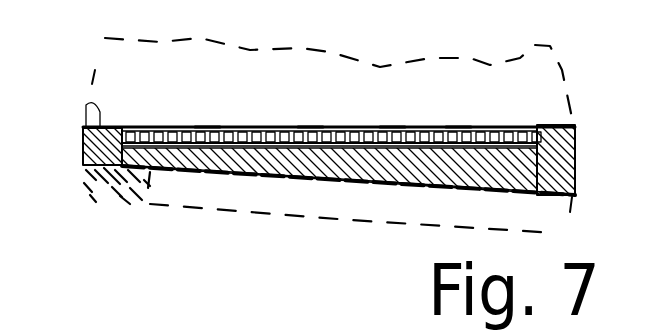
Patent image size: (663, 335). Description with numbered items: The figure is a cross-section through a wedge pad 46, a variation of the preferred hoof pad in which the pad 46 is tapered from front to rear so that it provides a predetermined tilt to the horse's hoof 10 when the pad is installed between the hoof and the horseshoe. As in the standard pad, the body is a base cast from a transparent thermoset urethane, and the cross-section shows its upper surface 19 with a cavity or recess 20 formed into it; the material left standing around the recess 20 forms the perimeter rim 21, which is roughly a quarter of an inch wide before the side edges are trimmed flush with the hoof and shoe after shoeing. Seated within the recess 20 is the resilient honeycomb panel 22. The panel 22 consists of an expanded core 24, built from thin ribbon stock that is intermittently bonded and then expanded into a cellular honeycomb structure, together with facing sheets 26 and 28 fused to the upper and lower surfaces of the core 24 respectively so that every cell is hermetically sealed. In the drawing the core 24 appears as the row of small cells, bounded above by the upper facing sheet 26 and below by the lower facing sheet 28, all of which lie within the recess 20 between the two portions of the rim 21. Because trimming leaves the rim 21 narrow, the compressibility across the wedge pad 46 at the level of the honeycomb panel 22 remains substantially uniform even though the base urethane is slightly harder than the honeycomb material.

The horse's hoof 10 is at (117, 32).
The upper surface 19 is at (86, 105).
The cavity or recess 20 is at (137, 127).
The perimeter rim 21 is at (83, 140).
The resilient honeycomb panel 22 is at (207, 127).
The expanded core 24 is at (310, 127).
The upper facing sheet 26 is at (392, 127).
The lower facing sheet 28 is at (458, 127).
The wedge pad 46 is at (306, 182).